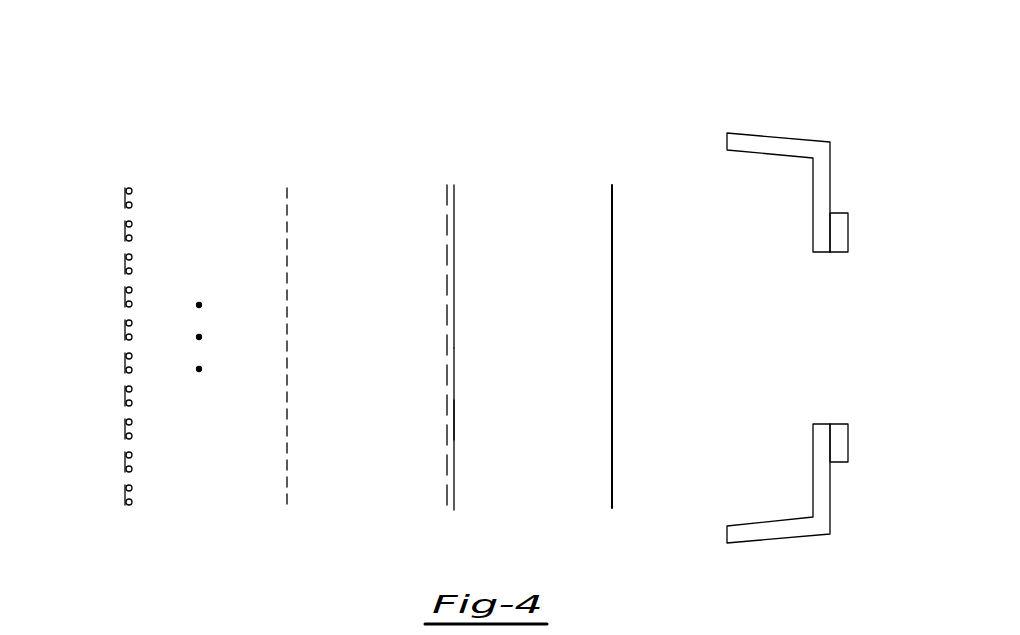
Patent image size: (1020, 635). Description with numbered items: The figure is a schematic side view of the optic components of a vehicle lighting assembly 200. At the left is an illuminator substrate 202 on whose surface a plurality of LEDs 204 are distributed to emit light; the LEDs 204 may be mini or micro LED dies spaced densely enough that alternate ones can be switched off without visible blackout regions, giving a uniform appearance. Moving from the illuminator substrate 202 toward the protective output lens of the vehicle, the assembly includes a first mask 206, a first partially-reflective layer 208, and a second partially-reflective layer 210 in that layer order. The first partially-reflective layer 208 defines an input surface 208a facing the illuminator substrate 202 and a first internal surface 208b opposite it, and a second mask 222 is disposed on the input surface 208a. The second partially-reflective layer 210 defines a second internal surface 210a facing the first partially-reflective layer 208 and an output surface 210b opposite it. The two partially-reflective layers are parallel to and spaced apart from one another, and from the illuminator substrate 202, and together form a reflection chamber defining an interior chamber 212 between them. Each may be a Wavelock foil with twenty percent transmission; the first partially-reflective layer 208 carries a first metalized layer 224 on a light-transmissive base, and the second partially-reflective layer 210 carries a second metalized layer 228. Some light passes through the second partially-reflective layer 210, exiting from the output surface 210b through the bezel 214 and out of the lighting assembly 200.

The lighting assembly 200 is at (700, 77).
The illuminator substrate 202 is at (119, 169).
The LEDs 204 is at (133, 189).
The first mask 206 is at (284, 525).
The first partially-reflective layer 208 is at (456, 168).
The input surface 208a is at (453, 370).
The first internal surface 208b is at (455, 421).
The second partially-reflective layer 210 is at (614, 525).
The second internal surface 210a is at (598, 276).
The output surface 210b is at (626, 403).
The interior chamber 212 is at (549, 354).
The bezel 214 is at (806, 126).
The second mask 222 is at (447, 287).
The first metalized layer 224 is at (505, 450).
The second metalized layer 228 is at (569, 254).